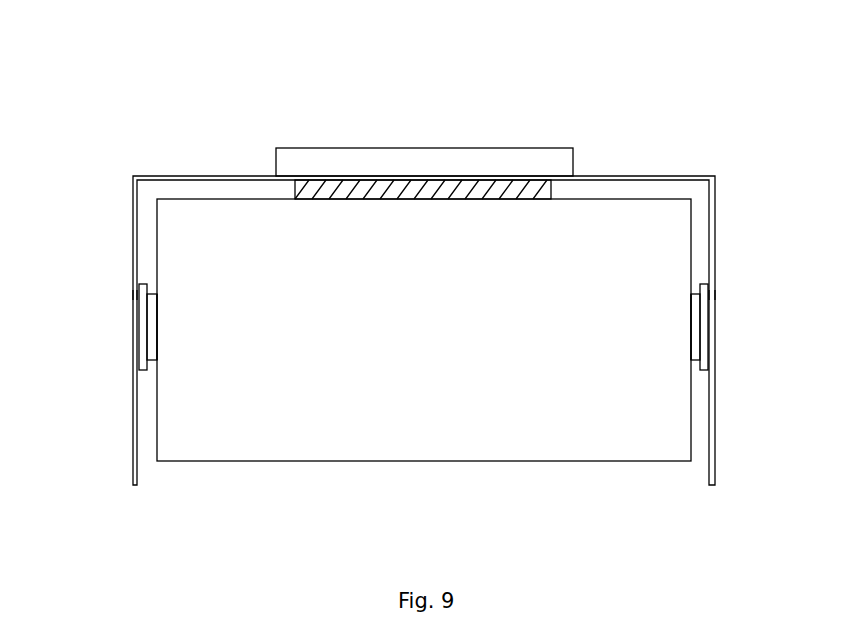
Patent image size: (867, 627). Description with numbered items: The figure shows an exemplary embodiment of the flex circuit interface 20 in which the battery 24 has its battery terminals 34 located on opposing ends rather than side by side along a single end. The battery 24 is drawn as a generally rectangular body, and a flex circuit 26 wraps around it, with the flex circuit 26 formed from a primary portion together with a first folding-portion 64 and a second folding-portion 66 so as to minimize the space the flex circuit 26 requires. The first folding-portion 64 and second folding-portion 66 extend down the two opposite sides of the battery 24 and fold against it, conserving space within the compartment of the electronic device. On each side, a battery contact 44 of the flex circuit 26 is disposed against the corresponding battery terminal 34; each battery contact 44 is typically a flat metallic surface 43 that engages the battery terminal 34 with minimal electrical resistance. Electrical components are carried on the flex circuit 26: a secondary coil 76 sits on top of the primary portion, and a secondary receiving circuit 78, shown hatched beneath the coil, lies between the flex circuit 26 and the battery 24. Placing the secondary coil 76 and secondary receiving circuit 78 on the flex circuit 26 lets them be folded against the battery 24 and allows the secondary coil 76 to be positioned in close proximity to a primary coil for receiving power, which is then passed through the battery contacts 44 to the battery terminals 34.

The flex circuit interface 20 is at (628, 64).
The battery 24 is at (238, 461).
The flex circuit 26 is at (229, 175).
The battery terminals 34 is at (156, 350).
The flat metallic surface 43 is at (143, 330).
The battery contacts 44 is at (143, 284).
The first folding-portion 64 is at (715, 408).
The second folding-portion 66 is at (132, 424).
The secondary coil 76 is at (508, 148).
The secondary receiving circuit 78 is at (432, 202).